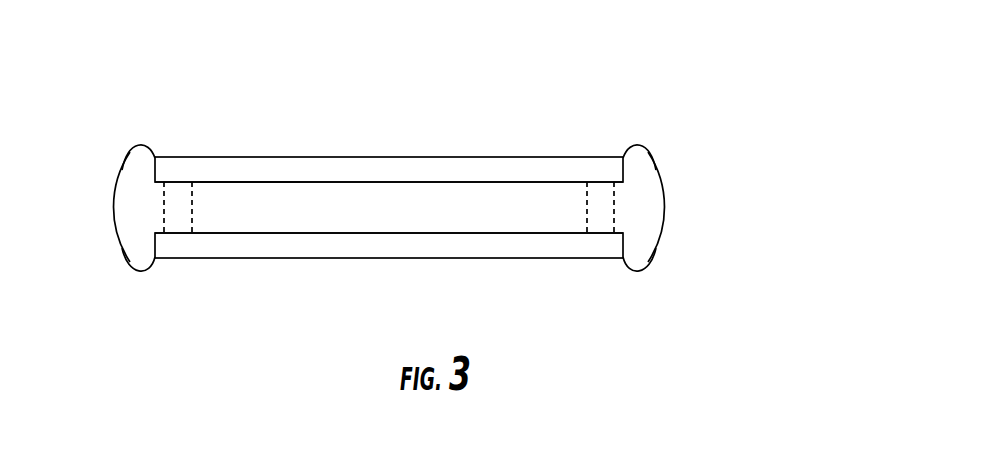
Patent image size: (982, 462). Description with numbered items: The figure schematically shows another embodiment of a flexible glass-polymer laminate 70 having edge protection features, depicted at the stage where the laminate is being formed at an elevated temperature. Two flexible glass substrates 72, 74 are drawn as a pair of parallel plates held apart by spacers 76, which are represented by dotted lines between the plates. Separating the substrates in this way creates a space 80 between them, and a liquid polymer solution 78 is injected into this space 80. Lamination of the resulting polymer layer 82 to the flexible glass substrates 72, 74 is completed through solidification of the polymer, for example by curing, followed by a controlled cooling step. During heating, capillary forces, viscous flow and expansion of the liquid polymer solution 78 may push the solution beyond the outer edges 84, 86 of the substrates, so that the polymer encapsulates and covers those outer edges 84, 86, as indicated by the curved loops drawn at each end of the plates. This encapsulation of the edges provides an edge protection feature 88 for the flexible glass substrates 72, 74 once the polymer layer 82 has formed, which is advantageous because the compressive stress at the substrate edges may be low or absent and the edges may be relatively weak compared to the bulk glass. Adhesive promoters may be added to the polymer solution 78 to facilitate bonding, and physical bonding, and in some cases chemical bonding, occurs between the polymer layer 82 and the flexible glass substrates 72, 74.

The flexible glass-polymer laminate 70 is at (390, 169).
The flexible glass substrate 72 is at (305, 163).
The flexible glass substrate 74 is at (397, 248).
The spacers 76 is at (180, 208).
The liquid polymer solution 78 is at (412, 200).
The space 80 is at (252, 205).
The polymer layer 82 is at (352, 218).
The outer edge 84 is at (154, 171).
The outer edge 86 is at (154, 246).
The edge protection feature 88 is at (133, 207).